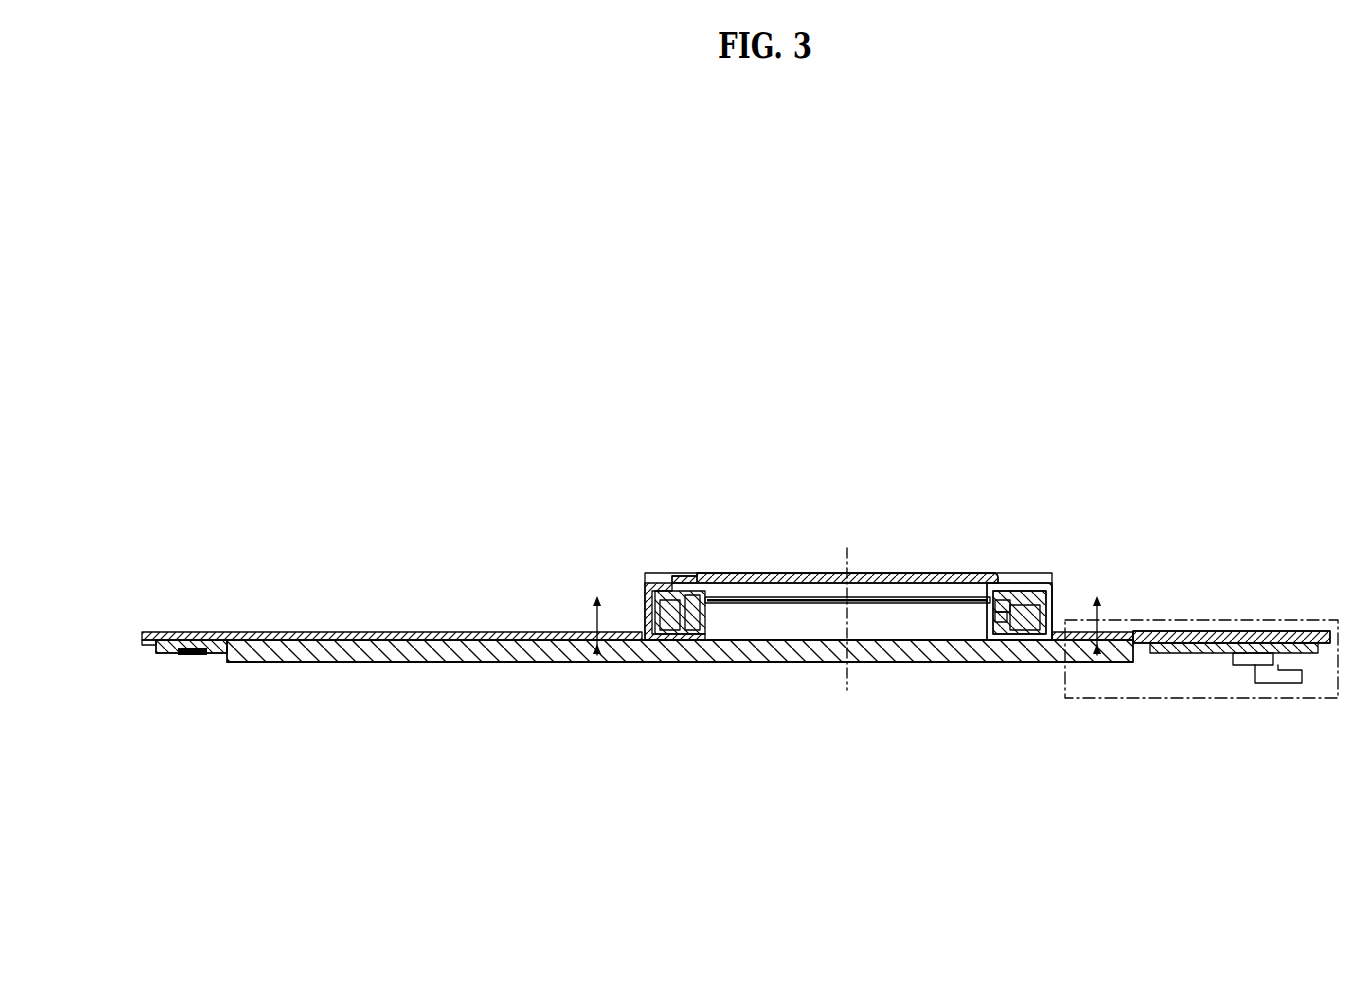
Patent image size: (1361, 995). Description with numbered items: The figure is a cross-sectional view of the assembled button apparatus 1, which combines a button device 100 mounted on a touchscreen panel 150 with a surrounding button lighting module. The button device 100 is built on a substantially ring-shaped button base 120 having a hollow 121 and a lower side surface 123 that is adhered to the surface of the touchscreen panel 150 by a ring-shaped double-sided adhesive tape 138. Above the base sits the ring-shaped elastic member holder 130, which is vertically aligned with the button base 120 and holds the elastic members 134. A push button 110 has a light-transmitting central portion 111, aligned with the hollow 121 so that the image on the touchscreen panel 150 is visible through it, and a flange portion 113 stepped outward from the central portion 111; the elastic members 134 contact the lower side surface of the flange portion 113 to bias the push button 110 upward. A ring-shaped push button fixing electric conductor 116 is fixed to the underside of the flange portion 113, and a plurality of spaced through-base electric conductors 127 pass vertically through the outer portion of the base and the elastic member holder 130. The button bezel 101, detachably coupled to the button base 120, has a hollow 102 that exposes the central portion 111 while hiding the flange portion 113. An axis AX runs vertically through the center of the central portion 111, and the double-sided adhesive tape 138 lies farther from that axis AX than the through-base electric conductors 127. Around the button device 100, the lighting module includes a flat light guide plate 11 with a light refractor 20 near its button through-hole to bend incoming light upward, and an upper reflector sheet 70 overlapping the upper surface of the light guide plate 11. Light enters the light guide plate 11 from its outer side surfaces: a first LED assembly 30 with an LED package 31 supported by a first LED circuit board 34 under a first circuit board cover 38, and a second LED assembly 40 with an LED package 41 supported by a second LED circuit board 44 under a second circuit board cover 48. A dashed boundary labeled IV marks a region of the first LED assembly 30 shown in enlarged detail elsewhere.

The button apparatus 1 is at (413, 457).
The light guide plate 11 is at (300, 664).
The light refractor 20 is at (597, 662).
The first LED assembly 30 is at (1315, 536).
The LED package 31 is at (1176, 630).
The first LED circuit board 34 is at (1290, 631).
The first circuit board cover 38 is at (1234, 632).
The second LED assembly 40 is at (222, 543).
The LED package 41 is at (198, 646).
The second LED circuit board 44 is at (178, 640).
The second circuit board cover 48 is at (150, 632).
The upper reflector sheet 70 is at (335, 632).
The button device 100 is at (906, 568).
The button bezel 101 is at (645, 588).
The hollow 102 is at (1000, 596).
The push button 110 is at (665, 463).
The central portion 111 is at (754, 572).
The flange portion 113 is at (678, 580).
The push button fixing electric conductor 116 is at (686, 612).
The button base 120 is at (1047, 622).
The hollow 121 is at (985, 615).
The lower side surface 123 is at (997, 655).
The through-base electric conductors 127 is at (672, 615).
The elastic member holder 130 is at (1048, 592).
The elastic members 134 is at (1025, 588).
The double-sided adhesive tape 138 is at (651, 645).
The touchscreen panel 150 is at (381, 662).
The axis AX is at (846, 683).
The line IV is at (1244, 700).